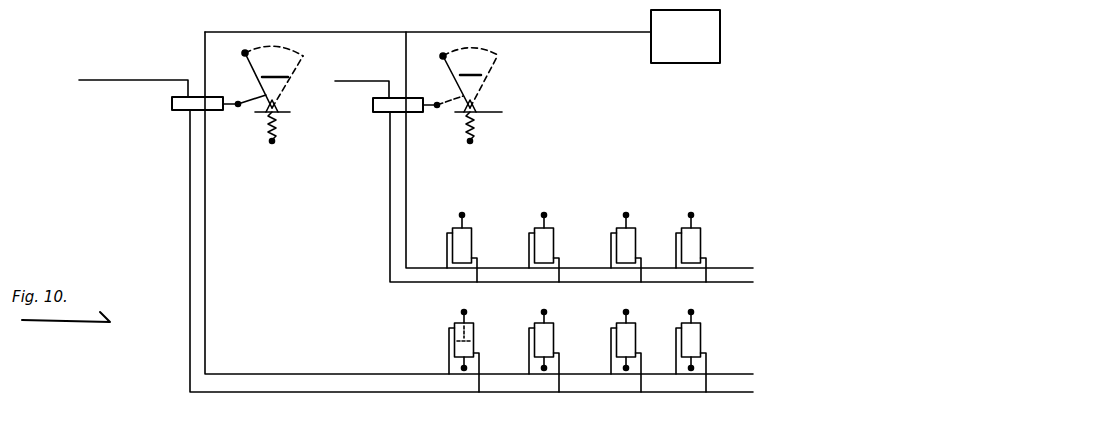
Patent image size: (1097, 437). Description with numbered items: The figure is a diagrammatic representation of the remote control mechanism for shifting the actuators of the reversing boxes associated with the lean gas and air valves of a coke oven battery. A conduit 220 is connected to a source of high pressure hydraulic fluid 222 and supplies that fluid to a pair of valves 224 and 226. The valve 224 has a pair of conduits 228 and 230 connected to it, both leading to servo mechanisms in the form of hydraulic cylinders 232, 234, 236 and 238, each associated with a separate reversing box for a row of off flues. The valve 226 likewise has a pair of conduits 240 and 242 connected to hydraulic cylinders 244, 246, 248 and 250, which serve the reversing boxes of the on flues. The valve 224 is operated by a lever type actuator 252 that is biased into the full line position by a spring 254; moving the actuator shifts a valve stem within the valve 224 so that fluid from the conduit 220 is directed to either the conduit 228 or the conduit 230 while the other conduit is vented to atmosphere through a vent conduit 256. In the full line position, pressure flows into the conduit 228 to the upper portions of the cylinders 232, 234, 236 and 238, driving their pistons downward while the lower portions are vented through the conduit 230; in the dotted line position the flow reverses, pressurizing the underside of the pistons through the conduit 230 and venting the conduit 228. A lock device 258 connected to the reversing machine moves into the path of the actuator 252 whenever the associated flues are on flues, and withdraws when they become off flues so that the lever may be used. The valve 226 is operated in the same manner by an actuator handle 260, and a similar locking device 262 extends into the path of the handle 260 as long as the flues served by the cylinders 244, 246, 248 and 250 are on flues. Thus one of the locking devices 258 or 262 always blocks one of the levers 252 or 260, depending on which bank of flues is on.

The conduit 220 is at (550, 32).
The source of high pressure hydraulic fluid 222 is at (708, 35).
The valve 224 is at (176, 112).
The valve 226 is at (378, 113).
The conduit 228 is at (205, 198).
The conduit 230 is at (190, 216).
The hydraulic cylinder 232 is at (473, 332).
The hydraulic cylinder 234 is at (553, 332).
The hydraulic cylinder 236 is at (635, 332).
The hydraulic cylinder 238 is at (700, 332).
The conduit 240 is at (406, 190).
The conduit 242 is at (390, 200).
The hydraulic cylinder 244 is at (471, 235).
The hydraulic cylinder 246 is at (553, 235).
The hydraulic cylinder 248 is at (635, 235).
The hydraulic cylinder 250 is at (700, 235).
The lever type actuator 252 is at (272, 79).
The spring 254 is at (268, 130).
The vent conduit 256 is at (160, 78).
The lock device 258 is at (290, 78).
The actuator handle 260 is at (471, 96).
The locking device 262 is at (483, 77).